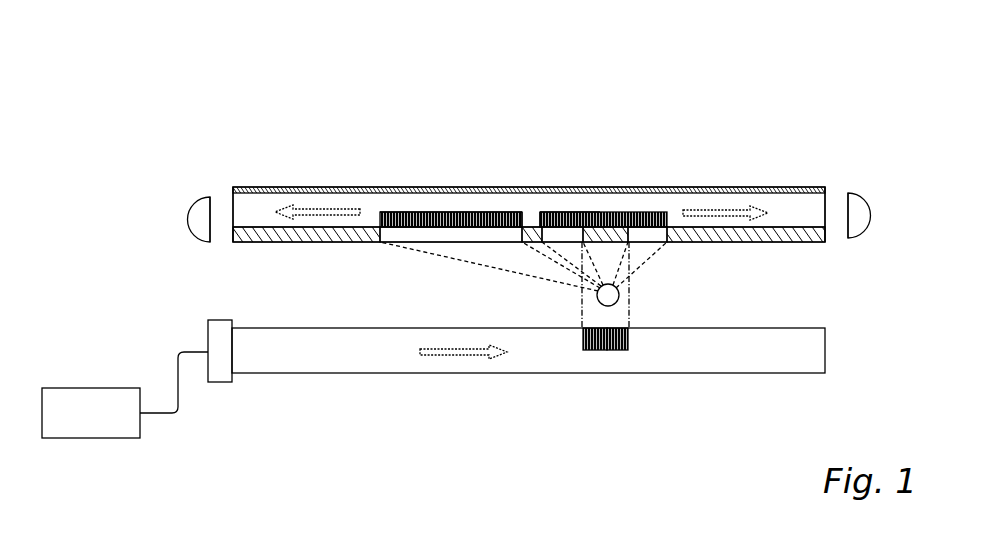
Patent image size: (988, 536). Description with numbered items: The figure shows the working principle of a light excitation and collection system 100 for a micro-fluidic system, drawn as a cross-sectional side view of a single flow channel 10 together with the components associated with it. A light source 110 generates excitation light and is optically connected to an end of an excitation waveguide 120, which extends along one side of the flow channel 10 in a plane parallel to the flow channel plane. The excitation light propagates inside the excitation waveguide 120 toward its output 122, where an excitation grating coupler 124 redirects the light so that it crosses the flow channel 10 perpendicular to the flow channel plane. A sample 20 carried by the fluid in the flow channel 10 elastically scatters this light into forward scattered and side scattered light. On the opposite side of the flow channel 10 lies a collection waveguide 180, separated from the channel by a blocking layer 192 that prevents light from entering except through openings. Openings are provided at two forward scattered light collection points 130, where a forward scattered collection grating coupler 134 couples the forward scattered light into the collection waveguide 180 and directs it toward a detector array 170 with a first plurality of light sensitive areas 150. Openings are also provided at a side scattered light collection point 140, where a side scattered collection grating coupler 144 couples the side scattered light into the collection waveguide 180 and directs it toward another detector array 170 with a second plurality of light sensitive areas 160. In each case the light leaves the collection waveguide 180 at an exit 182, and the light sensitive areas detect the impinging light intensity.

The light excitation and collection system 100 is at (180, 130).
The exit 182 is at (232, 203).
The side scattered light collection point 140 is at (398, 212).
The side scattered collection grating coupler 144 is at (488, 213).
The collection waveguide 180 is at (528, 217).
The forward scattered collection grating coupler 134 is at (548, 213).
The forward scattered light collection points 130 is at (642, 213).
The detector array 170 is at (190, 222).
The second plurality of light sensitive areas 160 is at (212, 224).
The first plurality of light sensitive areas 150 is at (848, 218).
The blocking layer 192 is at (340, 238).
The light source 110 is at (85, 388).
The flow channel 10 is at (340, 306).
The excitation waveguide 120 is at (384, 363).
The excitation grating coupler 124 is at (597, 351).
The output 122 is at (608, 351).
The sample 20 is at (617, 300).